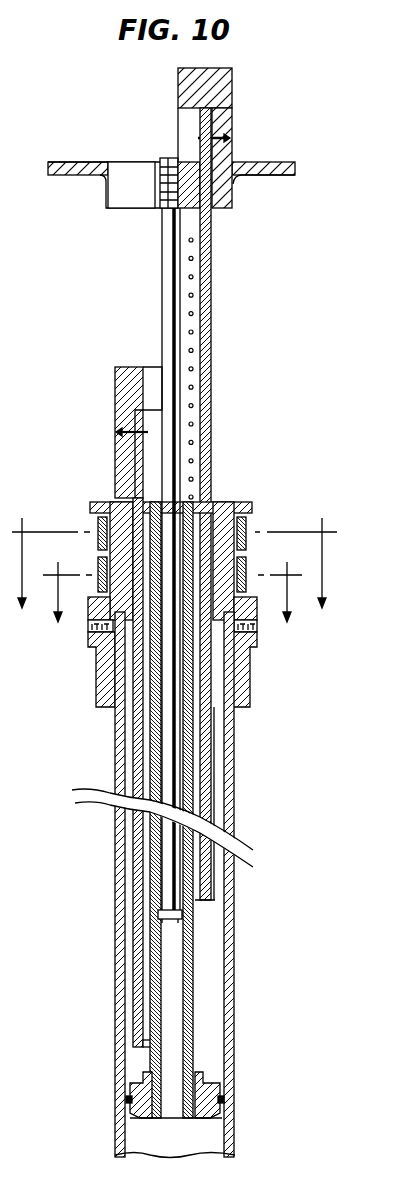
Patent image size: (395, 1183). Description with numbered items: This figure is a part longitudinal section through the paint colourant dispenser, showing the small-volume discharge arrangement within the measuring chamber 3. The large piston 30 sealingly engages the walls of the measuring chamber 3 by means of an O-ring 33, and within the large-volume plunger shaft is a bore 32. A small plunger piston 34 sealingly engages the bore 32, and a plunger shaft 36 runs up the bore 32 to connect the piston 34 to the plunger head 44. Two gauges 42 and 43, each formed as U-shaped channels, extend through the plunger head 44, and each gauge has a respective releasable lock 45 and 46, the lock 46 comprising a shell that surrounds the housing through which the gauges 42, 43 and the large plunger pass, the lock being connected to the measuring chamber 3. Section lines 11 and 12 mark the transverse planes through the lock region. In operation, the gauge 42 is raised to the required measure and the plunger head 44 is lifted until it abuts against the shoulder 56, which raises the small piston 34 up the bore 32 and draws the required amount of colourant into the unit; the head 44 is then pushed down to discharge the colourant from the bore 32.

The measuring chamber 3 is at (235, 790).
The section line 11- 11 is at (175, 576).
The section line 12- 12 is at (172, 607).
The piston 30 is at (210, 1108).
The bore 32 is at (183, 1024).
The O-ring 33 is at (127, 1100).
The piston 34 is at (180, 918).
The plunger shaft 36 is at (168, 328).
The gauge 42 is at (196, 415).
The gauge 43 is at (138, 734).
The plunger head 44 is at (287, 176).
The releasable lock 45 is at (240, 500).
The releasable lock 46 is at (92, 642).
The shoulder 56 is at (222, 160).